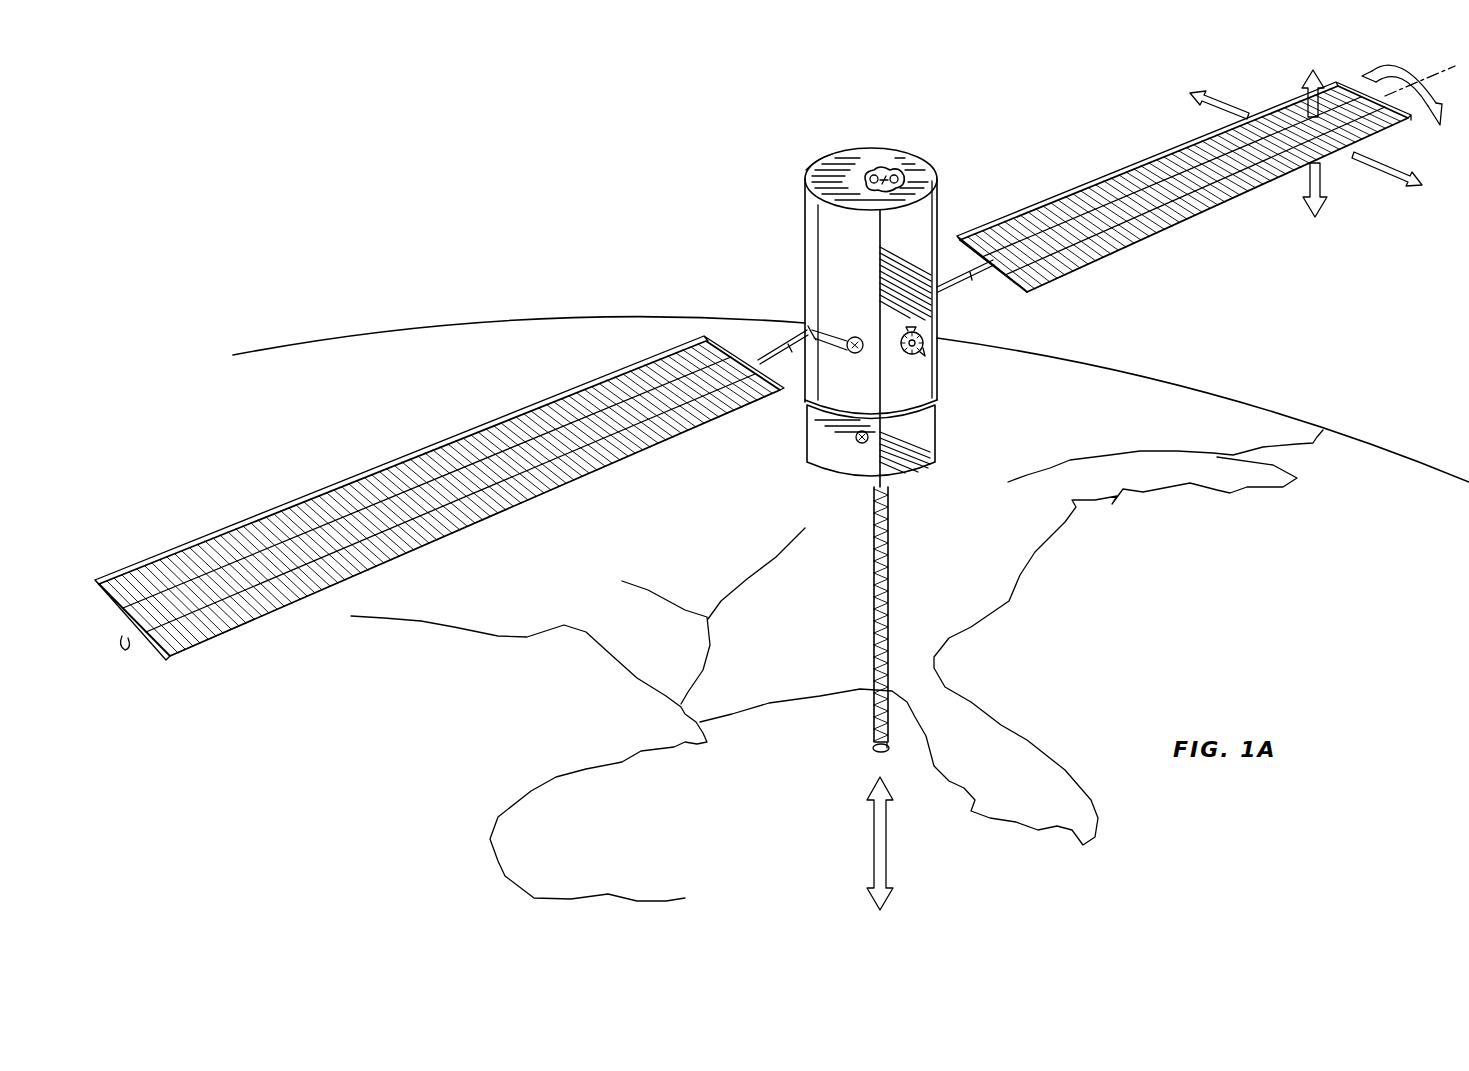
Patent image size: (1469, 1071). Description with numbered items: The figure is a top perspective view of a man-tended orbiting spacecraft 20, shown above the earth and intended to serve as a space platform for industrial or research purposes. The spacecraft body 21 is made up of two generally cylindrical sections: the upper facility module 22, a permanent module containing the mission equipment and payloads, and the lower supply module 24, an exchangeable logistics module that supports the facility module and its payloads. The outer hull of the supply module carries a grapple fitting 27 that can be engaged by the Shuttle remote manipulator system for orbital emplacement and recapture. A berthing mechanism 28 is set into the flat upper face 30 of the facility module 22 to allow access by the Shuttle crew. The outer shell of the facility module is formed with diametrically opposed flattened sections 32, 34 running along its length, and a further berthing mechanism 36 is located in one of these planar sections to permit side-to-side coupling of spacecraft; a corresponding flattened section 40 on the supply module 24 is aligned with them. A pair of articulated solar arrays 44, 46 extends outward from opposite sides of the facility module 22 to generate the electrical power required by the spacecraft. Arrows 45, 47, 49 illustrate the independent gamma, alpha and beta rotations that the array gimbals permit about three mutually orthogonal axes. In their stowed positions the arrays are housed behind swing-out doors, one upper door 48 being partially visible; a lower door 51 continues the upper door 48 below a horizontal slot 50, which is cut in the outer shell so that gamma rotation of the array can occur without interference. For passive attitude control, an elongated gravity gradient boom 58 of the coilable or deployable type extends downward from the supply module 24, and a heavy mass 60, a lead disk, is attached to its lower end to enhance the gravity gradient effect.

The spacecraft 20 is at (766, 287).
The spacecraft body 21 is at (948, 379).
The facility module 22 is at (937, 207).
The supply module 24 is at (937, 434).
The grapple fitting 27 is at (858, 444).
The berthing mechanism 28 is at (902, 175).
The flat upper face 30 is at (862, 162).
The flattened section 32 is at (890, 246).
The flattened section 34 is at (823, 163).
The berthing mechanism 36 is at (922, 337).
The flattened section 40 is at (915, 463).
The solar array 44 is at (606, 485).
The arrow 45 is at (1218, 108).
The solar array 46 is at (1168, 240).
The arrow 47 is at (1303, 95).
The upper door 48 is at (813, 243).
The arrow 49 is at (1440, 123).
The horizontal slot 50 is at (838, 334).
The lower door 51 is at (808, 382).
The gravity gradient boom 58 is at (887, 575).
The mass 60 is at (866, 747).